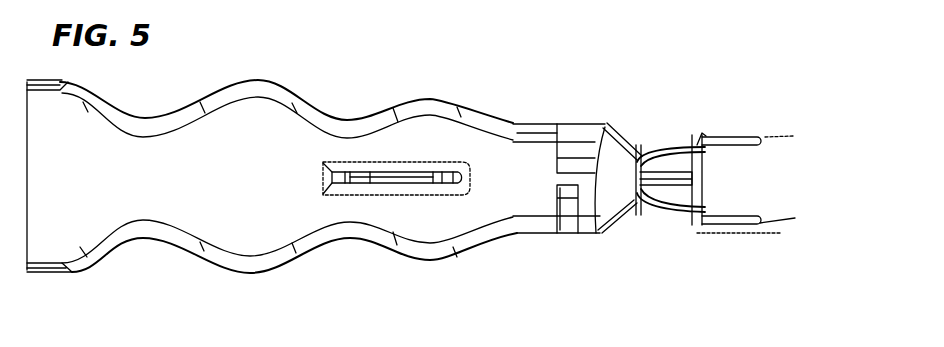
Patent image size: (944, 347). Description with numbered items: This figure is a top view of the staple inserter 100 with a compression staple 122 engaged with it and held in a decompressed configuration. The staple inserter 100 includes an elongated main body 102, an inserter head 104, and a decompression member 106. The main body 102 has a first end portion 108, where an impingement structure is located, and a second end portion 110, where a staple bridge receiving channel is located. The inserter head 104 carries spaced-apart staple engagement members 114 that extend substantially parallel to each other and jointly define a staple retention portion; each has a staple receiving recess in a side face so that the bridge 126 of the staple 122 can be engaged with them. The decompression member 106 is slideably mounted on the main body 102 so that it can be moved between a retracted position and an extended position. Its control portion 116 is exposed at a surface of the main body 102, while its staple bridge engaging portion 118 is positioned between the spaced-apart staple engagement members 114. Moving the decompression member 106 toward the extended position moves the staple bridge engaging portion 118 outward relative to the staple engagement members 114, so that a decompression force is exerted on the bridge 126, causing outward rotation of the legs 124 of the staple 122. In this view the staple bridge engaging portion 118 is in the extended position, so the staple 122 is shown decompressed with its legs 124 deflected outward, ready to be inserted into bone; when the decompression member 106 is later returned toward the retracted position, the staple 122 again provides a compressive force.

The staple inserter 100 is at (493, 69).
The main body 102 is at (250, 133).
The inserter head 104 is at (605, 128).
The decompression member 106 is at (447, 178).
The first end portion 108 is at (530, 224).
The second end portion 110 is at (73, 272).
The spaced-apart staple engagement members 114 is at (625, 213).
The control portion 116 is at (390, 178).
The staple bridge engaging portion 118 is at (669, 184).
The staple 122 is at (675, 143).
The legs 124 is at (738, 133).
The bridge 126 is at (702, 178).